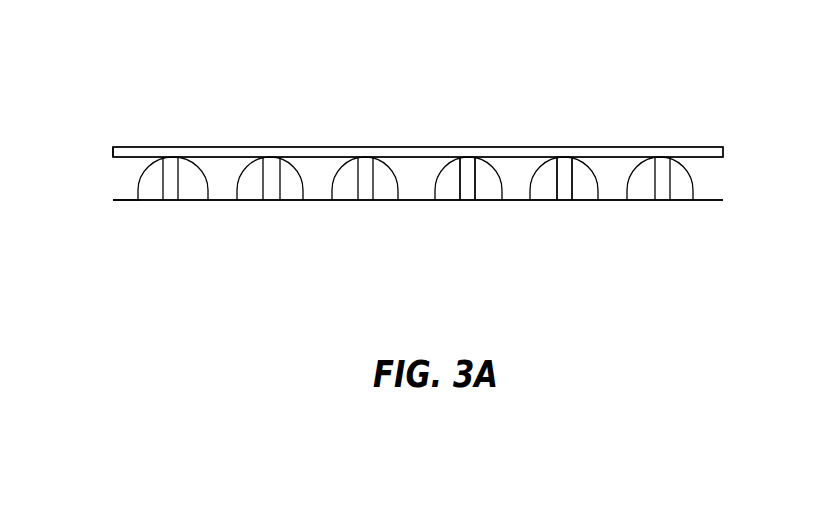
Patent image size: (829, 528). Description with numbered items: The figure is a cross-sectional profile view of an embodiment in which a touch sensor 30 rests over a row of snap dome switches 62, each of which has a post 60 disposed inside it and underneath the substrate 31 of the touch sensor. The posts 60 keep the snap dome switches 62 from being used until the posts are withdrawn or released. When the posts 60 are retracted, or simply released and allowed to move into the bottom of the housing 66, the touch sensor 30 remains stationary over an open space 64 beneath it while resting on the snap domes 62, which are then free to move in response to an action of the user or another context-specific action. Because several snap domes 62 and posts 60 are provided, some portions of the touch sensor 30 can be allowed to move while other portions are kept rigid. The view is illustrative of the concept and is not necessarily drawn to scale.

The touch sensor 30 is at (298, 102).
The substrate 31 is at (418, 147).
The posts 60 is at (182, 192).
The snap dome switches 62 is at (495, 192).
The open space 64 is at (112, 173).
The housing 66 is at (612, 206).